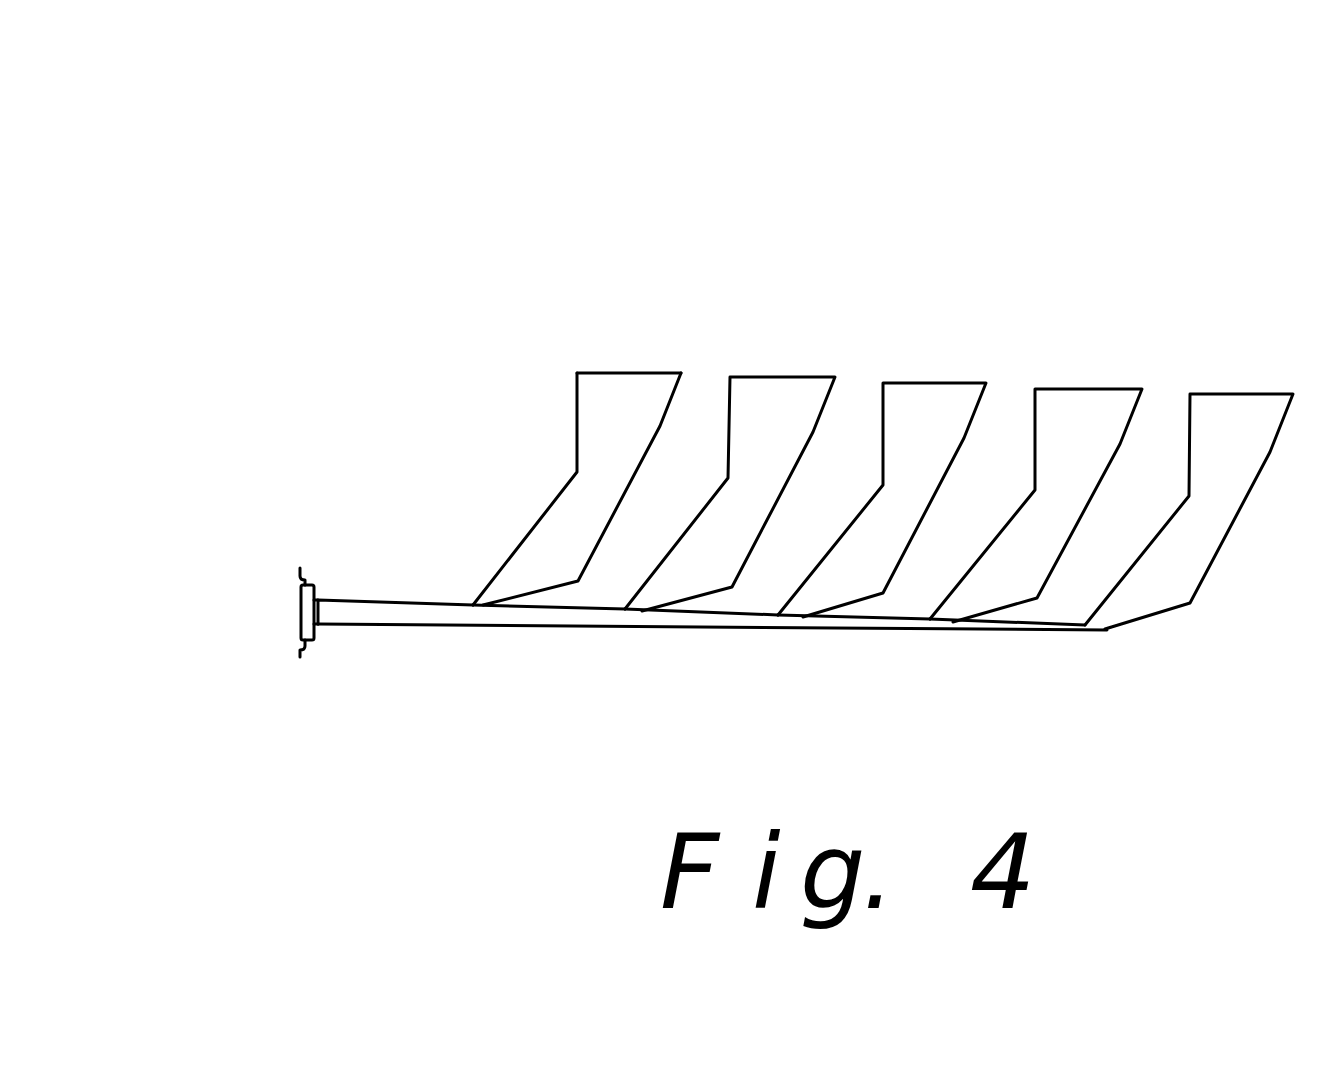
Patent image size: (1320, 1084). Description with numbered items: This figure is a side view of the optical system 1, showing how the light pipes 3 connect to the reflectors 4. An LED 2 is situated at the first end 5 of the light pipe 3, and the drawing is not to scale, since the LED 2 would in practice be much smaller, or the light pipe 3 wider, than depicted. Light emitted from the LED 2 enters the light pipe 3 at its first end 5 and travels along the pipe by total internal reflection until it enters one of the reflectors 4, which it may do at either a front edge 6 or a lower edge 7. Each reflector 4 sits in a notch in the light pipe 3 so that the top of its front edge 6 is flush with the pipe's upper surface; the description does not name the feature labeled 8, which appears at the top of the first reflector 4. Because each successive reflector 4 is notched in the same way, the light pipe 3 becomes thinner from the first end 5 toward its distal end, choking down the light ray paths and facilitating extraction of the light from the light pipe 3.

The optical system 1 is at (432, 407).
The LED 2 is at (301, 613).
The light pipe 3 is at (395, 612).
The reflector 4 is at (765, 428).
The first end 5 is at (312, 606).
The front edge 6 is at (473, 605).
The lower edge 7 is at (482, 604).
The blade tip edge 8 is at (627, 372).